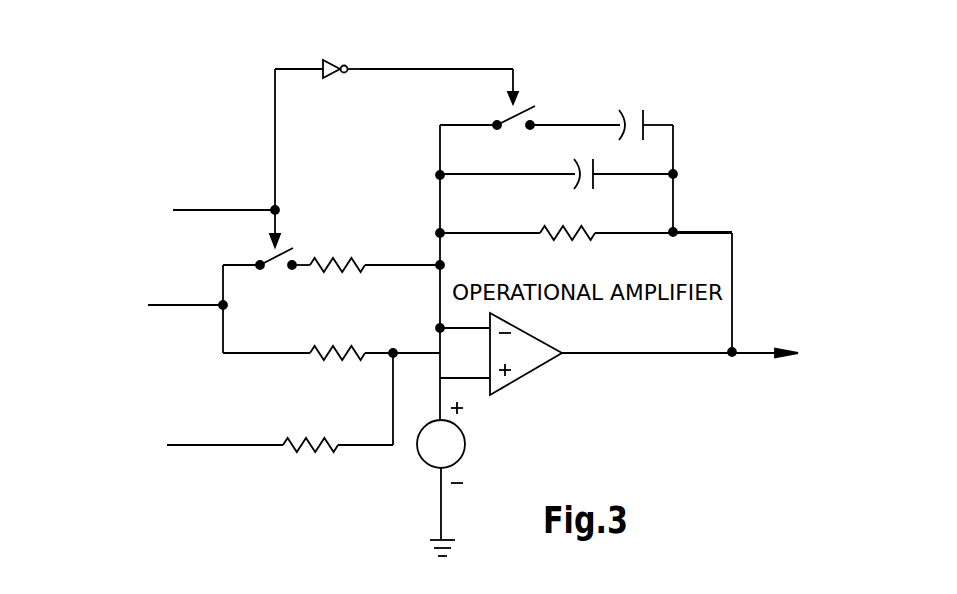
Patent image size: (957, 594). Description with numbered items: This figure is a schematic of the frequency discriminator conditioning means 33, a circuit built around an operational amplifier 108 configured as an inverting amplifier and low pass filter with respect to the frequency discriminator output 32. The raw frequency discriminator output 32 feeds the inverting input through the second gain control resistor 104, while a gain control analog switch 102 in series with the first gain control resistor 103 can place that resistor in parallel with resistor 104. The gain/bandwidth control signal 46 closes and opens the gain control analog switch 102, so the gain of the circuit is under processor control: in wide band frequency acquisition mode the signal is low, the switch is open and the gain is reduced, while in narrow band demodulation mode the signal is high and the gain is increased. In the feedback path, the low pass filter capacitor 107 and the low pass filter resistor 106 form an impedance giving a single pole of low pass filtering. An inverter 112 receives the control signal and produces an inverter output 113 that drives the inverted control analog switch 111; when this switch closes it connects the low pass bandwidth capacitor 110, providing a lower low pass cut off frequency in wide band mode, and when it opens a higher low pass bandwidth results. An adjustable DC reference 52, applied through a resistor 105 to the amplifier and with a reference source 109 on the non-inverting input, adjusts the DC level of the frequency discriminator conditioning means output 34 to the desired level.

The gain control analog switch 102 is at (280, 270).
The first gain control resistor 103 is at (337, 260).
The second gain control resistor 104 is at (338, 347).
The resistor 105 is at (312, 440).
The low pass filter resistor 106 is at (563, 240).
The low pass filter capacitor 107 is at (580, 185).
The operational amplifier 108 is at (533, 337).
The reference voltage source Vref 109 is at (453, 450).
The low pass bandwidth capacitor 110 is at (633, 107).
The inverted control analog switch 111 is at (540, 112).
The inverter 112 is at (334, 56).
The inverter output 113 is at (440, 66).
The gain/bandwidth control signal 46 is at (186, 158).
The frequency discriminator output 32 is at (176, 325).
The adjustable DC reference 52 is at (164, 474).
The frequency discriminator conditioning means output 34 is at (737, 393).
The frequency discriminator conditioning means 33 is at (763, 377).